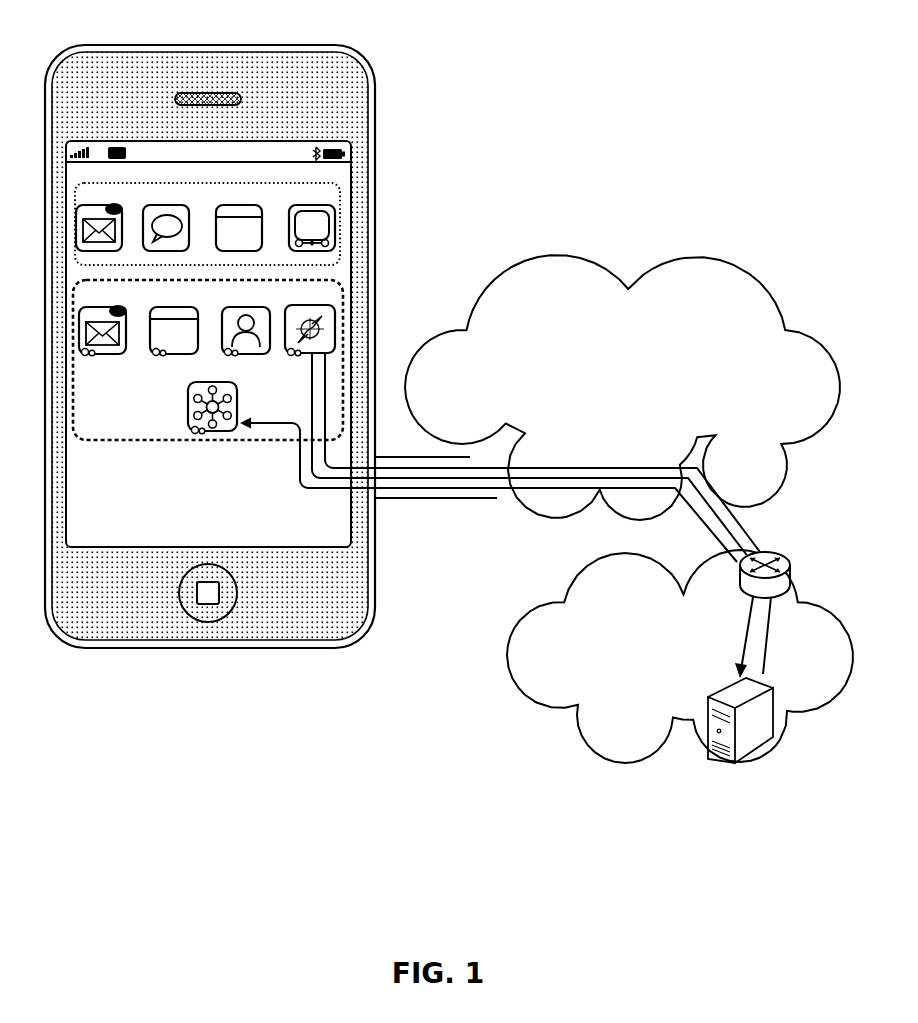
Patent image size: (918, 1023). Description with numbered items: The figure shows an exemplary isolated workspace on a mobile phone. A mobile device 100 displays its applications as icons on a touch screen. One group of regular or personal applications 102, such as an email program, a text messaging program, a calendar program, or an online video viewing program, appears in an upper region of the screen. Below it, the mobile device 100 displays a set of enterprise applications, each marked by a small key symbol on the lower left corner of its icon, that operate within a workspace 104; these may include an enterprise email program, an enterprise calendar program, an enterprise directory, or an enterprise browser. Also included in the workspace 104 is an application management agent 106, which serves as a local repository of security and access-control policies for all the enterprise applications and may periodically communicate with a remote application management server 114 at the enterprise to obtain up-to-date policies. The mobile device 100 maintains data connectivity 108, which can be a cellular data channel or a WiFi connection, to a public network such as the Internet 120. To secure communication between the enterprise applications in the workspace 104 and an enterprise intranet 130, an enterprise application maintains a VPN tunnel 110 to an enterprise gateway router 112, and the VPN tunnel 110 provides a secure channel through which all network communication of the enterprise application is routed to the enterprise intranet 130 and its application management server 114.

The mobile device 100 is at (375, 118).
The regular applications 102 is at (341, 200).
The workspace 104 is at (344, 303).
The application management agent 106 is at (238, 403).
The data connectivity 108 is at (440, 498).
The VPN tunnel 110 is at (505, 470).
The enterprise gateway router 112 is at (790, 582).
The application management server 114 is at (774, 713).
The Internet 120 is at (622, 387).
The enterprise intranet 130 is at (680, 656).